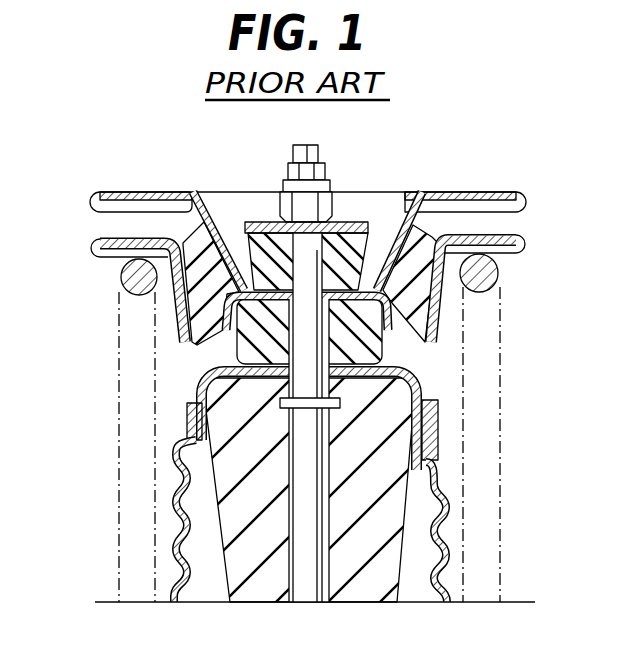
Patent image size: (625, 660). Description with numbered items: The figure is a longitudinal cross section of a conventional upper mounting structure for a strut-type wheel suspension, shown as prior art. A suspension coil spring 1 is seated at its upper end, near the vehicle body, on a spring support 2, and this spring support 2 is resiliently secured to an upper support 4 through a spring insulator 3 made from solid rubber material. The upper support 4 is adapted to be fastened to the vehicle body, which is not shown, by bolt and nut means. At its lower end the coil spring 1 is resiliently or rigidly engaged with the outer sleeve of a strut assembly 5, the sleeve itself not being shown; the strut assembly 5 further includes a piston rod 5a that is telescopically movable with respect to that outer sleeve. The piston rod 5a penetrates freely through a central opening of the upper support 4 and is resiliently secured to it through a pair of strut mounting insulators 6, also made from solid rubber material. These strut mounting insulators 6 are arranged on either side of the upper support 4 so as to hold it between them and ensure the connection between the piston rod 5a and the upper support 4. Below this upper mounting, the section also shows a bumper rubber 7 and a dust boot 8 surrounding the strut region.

The suspension coil spring 1 is at (119, 285).
The spring support 2 is at (95, 243).
The spring insulator 3 is at (128, 191).
The upper support 4 is at (178, 191).
The strut assembly 5 is at (330, 370).
The piston rod 5a is at (306, 198).
The strut mounting insulators 6 is at (383, 220).
The bumper rubber 7 is at (363, 588).
The dust boot 8 is at (450, 510).